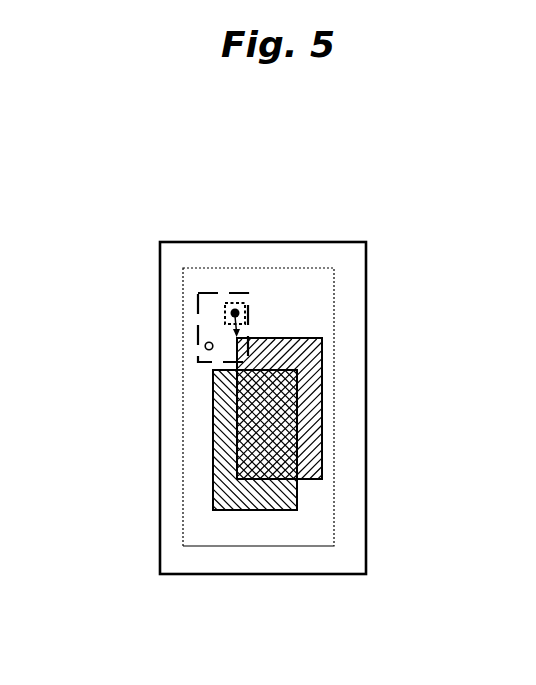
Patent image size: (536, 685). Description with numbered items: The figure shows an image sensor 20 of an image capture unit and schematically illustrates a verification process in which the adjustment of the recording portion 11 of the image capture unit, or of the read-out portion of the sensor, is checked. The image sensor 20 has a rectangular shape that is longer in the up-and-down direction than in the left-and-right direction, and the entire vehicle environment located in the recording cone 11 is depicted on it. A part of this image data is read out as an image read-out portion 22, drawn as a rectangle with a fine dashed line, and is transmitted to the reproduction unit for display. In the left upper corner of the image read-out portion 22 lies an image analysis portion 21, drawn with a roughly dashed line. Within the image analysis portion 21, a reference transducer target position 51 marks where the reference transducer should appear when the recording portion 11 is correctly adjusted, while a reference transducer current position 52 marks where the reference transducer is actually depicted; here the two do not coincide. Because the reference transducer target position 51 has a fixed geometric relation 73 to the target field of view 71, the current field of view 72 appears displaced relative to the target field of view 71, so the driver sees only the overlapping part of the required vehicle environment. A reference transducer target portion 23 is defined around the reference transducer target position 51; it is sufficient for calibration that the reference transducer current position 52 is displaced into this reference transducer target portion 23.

The recording portion 11 is at (160, 467).
The image sensor 20 is at (183, 547).
The image analysis portion 21 is at (212, 292).
The image read-out portion 22 is at (307, 546).
The reference transducer target portion 23 is at (233, 308).
The reference transducer target position 51 is at (232, 311).
The reference transducer current position 52 is at (205, 347).
The target field of view 71 is at (322, 446).
The current field of view 72 is at (297, 496).
The fixed geometric relation 73 is at (236, 323).